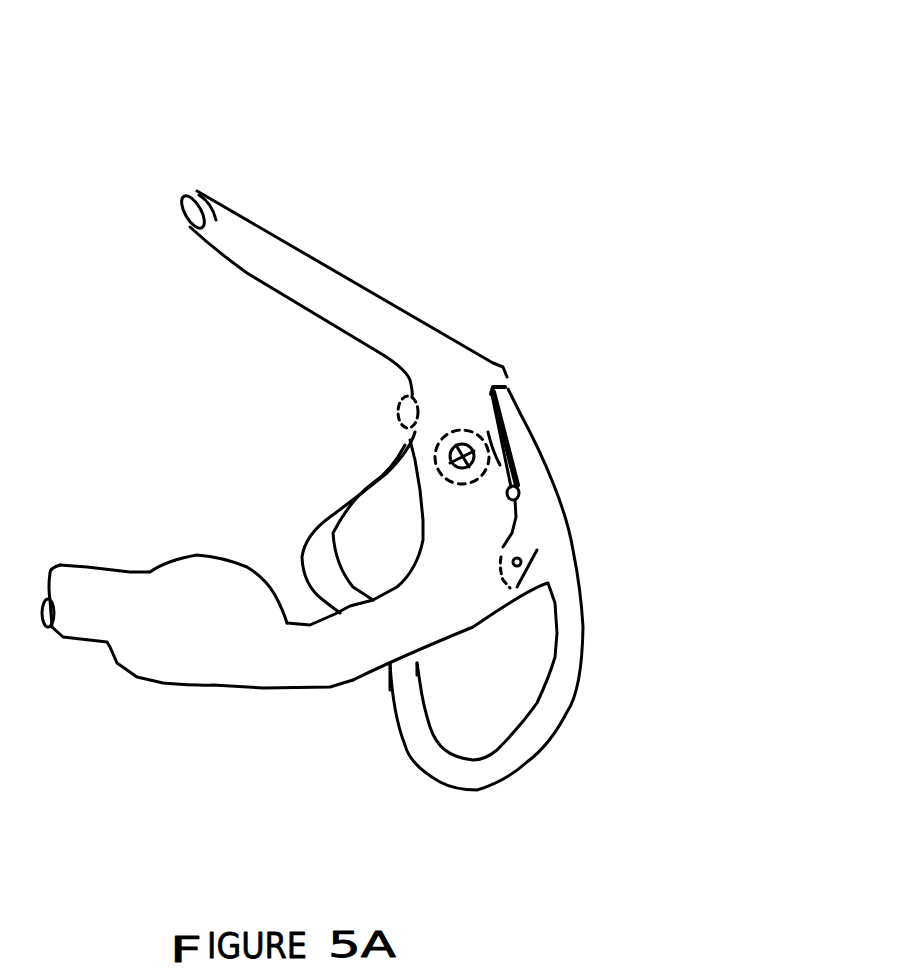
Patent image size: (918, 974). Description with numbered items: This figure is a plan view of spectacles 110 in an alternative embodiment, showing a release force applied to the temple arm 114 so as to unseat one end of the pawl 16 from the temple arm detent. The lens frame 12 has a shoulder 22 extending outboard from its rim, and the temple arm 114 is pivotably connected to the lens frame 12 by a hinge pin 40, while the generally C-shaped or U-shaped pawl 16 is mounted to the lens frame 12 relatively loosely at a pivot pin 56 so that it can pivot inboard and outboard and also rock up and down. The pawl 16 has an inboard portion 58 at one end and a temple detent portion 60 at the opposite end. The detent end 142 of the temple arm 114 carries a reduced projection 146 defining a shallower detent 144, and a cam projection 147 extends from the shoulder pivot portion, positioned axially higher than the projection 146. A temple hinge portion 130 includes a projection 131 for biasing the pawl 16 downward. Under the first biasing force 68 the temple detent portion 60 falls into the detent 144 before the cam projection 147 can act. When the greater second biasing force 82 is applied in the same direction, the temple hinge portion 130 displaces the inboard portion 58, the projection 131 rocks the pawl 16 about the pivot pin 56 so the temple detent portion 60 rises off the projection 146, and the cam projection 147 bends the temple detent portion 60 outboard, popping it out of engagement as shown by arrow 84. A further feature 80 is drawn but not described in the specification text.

The spectacles 110 is at (638, 128).
The second biasing force 82 is at (290, 108).
The first biasing force 68 is at (245, 200).
The temple arm 114 is at (195, 197).
The lens frame 12 is at (205, 701).
The pawl 16 is at (317, 540).
The shoulder 22 is at (191, 612).
The temple hinge portion 130 is at (410, 445).
The projection 131 is at (397, 400).
The inboard portion 58 is at (400, 413).
The cam projection 147 is at (488, 432).
The projection 146 is at (505, 372).
The detent 144 is at (503, 386).
The arrow 84 is at (506, 388).
The detent end 142 is at (516, 408).
The temple detent portion 60 is at (510, 418).
The pin 80 is at (520, 488).
The pivot pin 56 is at (527, 557).
The hinge pin 40 is at (457, 469).